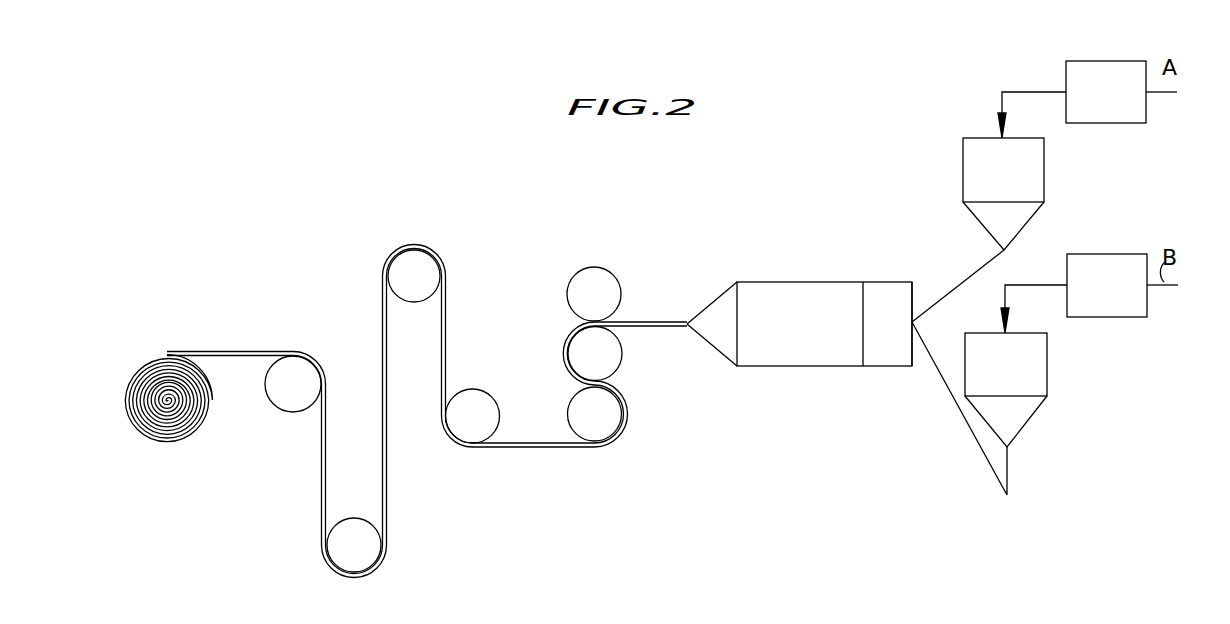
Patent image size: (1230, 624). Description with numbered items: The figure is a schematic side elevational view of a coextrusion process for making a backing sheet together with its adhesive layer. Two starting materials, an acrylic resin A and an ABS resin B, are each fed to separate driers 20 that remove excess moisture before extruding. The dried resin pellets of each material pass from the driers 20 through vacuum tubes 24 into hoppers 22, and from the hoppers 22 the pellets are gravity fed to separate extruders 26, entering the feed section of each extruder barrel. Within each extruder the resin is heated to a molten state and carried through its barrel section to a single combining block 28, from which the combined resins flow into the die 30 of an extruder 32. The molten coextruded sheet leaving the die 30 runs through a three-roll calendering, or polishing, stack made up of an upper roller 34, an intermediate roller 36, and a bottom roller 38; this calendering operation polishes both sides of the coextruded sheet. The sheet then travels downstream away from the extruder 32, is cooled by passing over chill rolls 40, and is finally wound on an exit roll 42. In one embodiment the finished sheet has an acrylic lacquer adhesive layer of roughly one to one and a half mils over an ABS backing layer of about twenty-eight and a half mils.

The drier 20 is at (1118, 68).
The hopper 22 is at (970, 167).
The vacuum tube 24 is at (1025, 92).
The extruder 26 is at (995, 220).
The combining block 28 is at (890, 348).
The die 30 is at (717, 308).
The extruder 32 is at (802, 350).
The upper roller 34 is at (593, 295).
The intermediate roller 36 is at (593, 353).
The bottom roller 38 is at (593, 412).
The chill roll 40 is at (403, 273).
The exit roll 42 is at (195, 411).